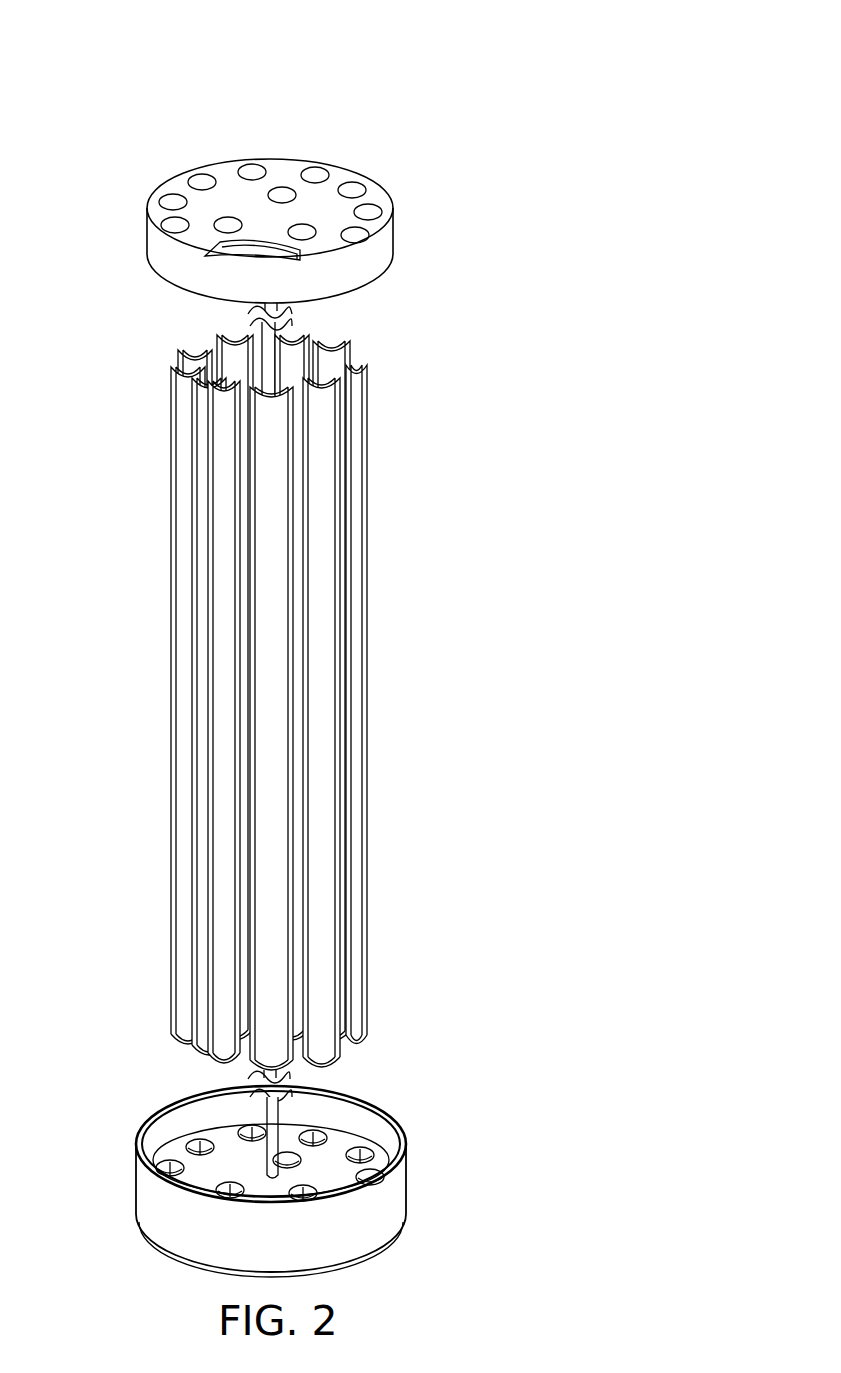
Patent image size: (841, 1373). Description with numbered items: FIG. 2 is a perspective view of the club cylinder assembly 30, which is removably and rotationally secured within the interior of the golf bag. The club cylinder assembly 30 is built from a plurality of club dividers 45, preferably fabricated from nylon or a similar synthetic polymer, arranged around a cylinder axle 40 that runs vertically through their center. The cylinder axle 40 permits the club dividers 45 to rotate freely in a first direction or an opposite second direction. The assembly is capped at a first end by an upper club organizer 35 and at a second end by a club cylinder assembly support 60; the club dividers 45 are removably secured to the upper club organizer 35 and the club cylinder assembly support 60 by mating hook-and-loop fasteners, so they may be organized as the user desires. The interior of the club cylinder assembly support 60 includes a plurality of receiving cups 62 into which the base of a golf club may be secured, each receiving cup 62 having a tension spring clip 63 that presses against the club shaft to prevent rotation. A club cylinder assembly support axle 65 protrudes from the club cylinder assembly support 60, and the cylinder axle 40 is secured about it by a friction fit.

The club cylinder assembly 30 is at (339, 154).
The upper club organizer 35 is at (390, 205).
The cylinder axle 40 is at (263, 332).
The club dividers 45 is at (378, 683).
The club cylinder assembly support 60 is at (281, 1163).
The receiving cups 62 is at (240, 1133).
The tension spring clip 63 is at (193, 1138).
The club cylinder assembly support axle 65 is at (272, 1148).